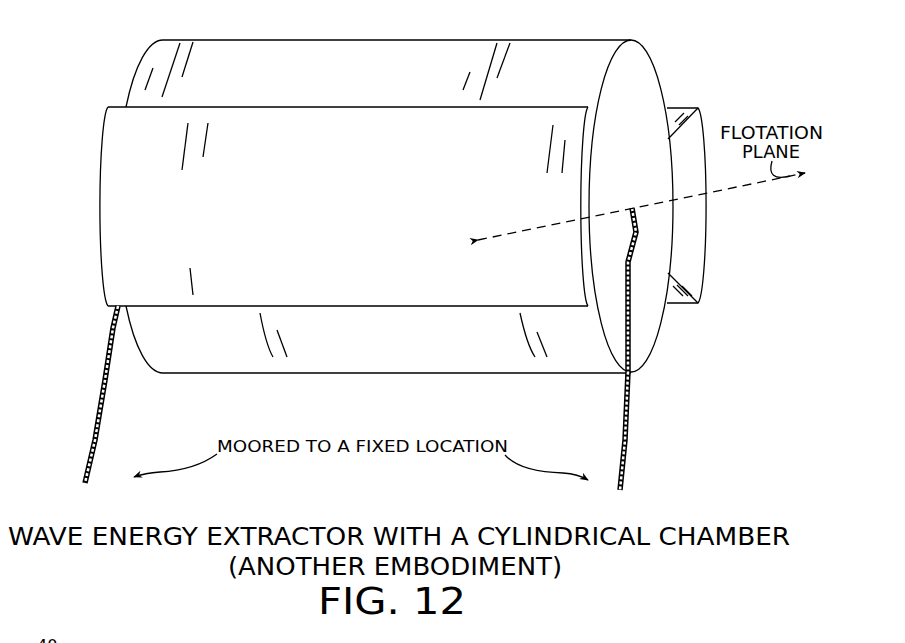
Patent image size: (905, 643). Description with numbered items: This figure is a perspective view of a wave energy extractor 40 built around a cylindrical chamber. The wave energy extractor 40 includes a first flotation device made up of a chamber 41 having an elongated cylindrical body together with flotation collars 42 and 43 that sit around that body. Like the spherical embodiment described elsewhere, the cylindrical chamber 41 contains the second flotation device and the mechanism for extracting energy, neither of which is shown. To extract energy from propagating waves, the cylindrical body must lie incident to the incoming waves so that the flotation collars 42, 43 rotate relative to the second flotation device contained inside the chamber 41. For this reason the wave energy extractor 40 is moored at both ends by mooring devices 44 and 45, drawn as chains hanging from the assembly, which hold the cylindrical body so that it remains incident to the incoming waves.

The wave energy extractor 40 is at (103, 29).
The chamber 41 is at (340, 83).
The flotation collar 42 is at (340, 190).
The flotation collar 43 is at (700, 181).
The mooring device 44 is at (101, 412).
The mooring device 45 is at (629, 450).